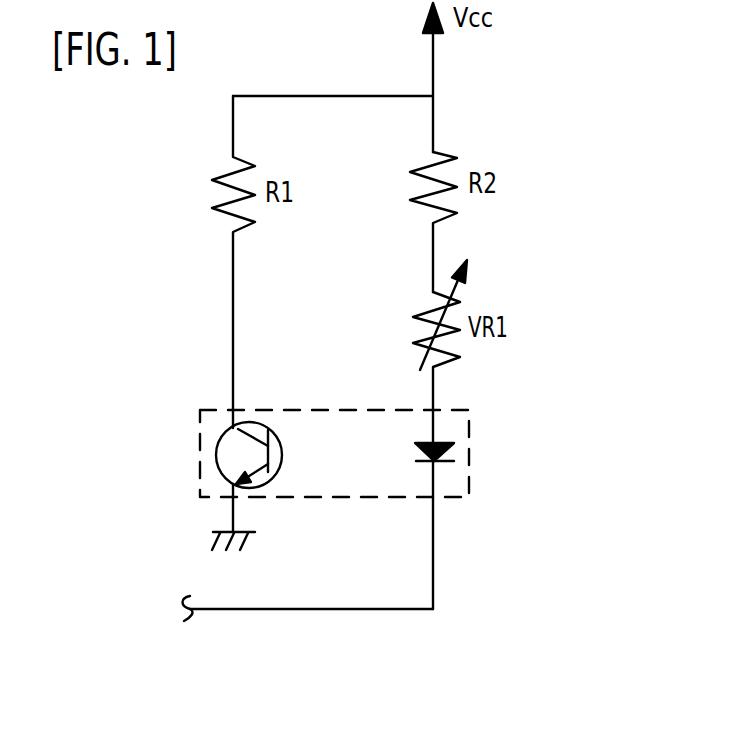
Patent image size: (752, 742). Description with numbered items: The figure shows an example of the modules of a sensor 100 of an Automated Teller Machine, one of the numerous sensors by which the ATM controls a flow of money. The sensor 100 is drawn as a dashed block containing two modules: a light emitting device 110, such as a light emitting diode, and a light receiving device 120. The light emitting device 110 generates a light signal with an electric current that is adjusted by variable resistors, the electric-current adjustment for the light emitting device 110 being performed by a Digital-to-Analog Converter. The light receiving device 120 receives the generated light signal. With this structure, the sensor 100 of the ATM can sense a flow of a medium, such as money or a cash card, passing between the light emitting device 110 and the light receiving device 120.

The sensor 100 is at (468, 411).
The light emitting device 110 is at (450, 450).
The light receiving device 120 is at (217, 445).